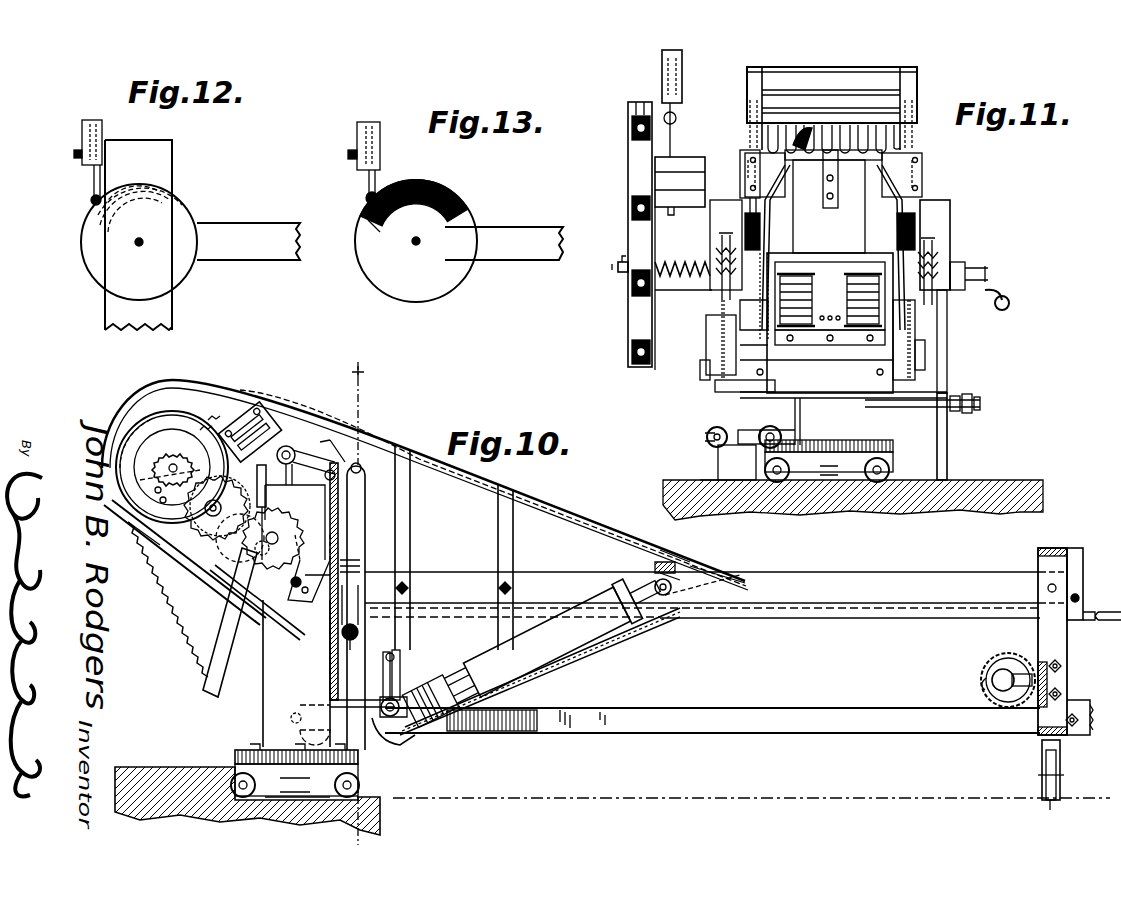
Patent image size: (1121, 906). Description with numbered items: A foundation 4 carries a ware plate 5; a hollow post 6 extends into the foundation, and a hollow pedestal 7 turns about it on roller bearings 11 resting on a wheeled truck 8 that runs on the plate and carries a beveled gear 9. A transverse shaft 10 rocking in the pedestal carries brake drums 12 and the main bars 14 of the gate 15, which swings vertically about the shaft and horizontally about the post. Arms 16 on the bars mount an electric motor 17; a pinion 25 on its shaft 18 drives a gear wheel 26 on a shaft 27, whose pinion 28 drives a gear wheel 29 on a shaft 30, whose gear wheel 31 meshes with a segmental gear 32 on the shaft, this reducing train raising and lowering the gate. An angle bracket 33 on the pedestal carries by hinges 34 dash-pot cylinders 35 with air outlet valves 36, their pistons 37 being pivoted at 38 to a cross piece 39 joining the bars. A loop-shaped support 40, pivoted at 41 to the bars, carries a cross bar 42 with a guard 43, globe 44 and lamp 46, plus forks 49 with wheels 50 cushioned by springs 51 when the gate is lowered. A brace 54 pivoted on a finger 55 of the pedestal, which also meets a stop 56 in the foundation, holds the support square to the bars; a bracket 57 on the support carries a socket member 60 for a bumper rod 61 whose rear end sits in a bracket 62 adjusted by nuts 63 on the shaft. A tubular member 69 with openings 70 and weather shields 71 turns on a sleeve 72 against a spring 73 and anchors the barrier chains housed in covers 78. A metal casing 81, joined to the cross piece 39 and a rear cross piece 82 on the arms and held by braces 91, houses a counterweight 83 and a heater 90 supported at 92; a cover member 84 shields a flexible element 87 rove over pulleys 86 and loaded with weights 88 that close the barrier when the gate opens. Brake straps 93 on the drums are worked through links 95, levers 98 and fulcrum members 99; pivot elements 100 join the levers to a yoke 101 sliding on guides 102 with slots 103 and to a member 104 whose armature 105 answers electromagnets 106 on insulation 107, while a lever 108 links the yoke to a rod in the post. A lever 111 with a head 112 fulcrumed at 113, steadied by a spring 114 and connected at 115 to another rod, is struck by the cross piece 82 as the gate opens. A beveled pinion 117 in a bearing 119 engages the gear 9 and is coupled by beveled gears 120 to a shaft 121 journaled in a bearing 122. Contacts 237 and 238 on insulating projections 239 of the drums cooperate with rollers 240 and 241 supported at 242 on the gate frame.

In FIG. 11, the floor 4 is at (838, 505).
In FIG. 10, the floor 4 is at (158, 767).
In FIG. 11, the track rail 5 is at (858, 500).
In FIG. 10, the track rail 5 is at (380, 783).
In FIG. 11, the floor surface 6 is at (820, 475).
In FIG. 10, the floor surface 6 is at (290, 800).
In FIG. 11, the column 7 is at (795, 395).
In FIG. 10, the column 7 is at (262, 675).
In FIG. 11, the carriage truck 8 is at (892, 462).
In FIG. 10, the carriage truck 8 is at (235, 765).
In FIG. 11, the carriage base plate 9 is at (890, 446).
In FIG. 10, the carriage base plate 9 is at (243, 752).
In FIG. 11, the pivot pin 10 is at (618, 268).
In FIG. 10, the pivot pin 10 is at (310, 561).
In FIG. 10, the section line 11 is at (352, 594).
In FIG. 12, the drum shaft 12 is at (178, 268).
In FIG. 13, the drum shaft 12 is at (430, 290).
In FIG. 11, the drum shaft 12 is at (920, 335).
In FIG. 11, the spring 14 is at (722, 250).
In FIG. 10, the spring 14 is at (745, 615).
In FIG. 10, the arrow 15 is at (987, 563).
In FIG. 10, the pawl lever 16 is at (215, 580).
In FIG. 10, the drum 17 is at (185, 455).
In FIG. 10, the drum rim 18 is at (160, 455).
In FIG. 10, the sprocket 25 is at (168, 460).
In FIG. 10, the rack 26 is at (165, 560).
In FIG. 10, the pinion shaft 27 is at (205, 510).
In FIG. 10, the gear 28 is at (217, 508).
In FIG. 10, the gear housing 29 is at (291, 512).
In FIG. 10, the gear 30 is at (273, 538).
In FIG. 10, the gear 31 is at (240, 538).
In FIG. 10, the bracket 32 is at (296, 620).
In FIG. 11, the slide bar 33 is at (916, 330).
In FIG. 10, the slide bar 33 is at (330, 660).
In FIG. 10, the pivot 34 is at (390, 729).
In FIG. 10, the hydraulic cylinder 35 is at (578, 648).
In FIG. 10, the cylinder trunnion 36 is at (400, 693).
In FIG. 10, the brace arm 37 is at (462, 670).
In FIG. 10, the pivot pin 38 is at (672, 586).
In FIG. 10, the bracket 39 is at (655, 567).
In FIG. 10, the end block 40 is at (1060, 647).
In FIG. 10, the pin 41 is at (1047, 588).
In FIG. 10, the bolts 42 is at (1062, 680).
In FIG. 10, the socket ring 43 is at (1015, 660).
In FIG. 10, the socket 44 is at (1000, 720).
In FIG. 10, the ball 46 is at (992, 682).
In FIG. 10, the caster wheel 49 is at (1060, 766).
In FIG. 10, the caster axle 50 is at (1051, 805).
In FIG. 10, the bolt 51 is at (1070, 735).
In FIG. 11, the lower frame beam 54 is at (960, 398).
In FIG. 10, the lower frame beam 54 is at (852, 705).
In FIG. 11, the adjusting nut 55 is at (982, 403).
In FIG. 11, the support post 56 is at (947, 464).
In FIG. 10, the end plate 57 is at (1083, 574).
In FIG. 10, the coupling 60 is at (1085, 620).
In FIG. 11, the rod 61 is at (1009, 303).
In FIG. 10, the rod 61 is at (887, 618).
In FIG. 11, the lever 62 is at (990, 288).
In FIG. 11, the bracket 63 is at (958, 268).
In FIG. 11, the upright column 69 is at (628, 170).
In FIG. 11, the bracket 70 is at (632, 136).
In FIG. 11, the guide 71 is at (636, 110).
In FIG. 11, the spring 72 is at (678, 262).
In FIG. 11, the rod 73 is at (682, 285).
In FIG. 11, the bracket 78 is at (632, 218).
In FIG. 10, the track 81 is at (578, 525).
In FIG. 10, the track 82 is at (122, 522).
In FIG. 10, the casing 83 is at (168, 382).
In FIG. 11, the rod 84 is at (682, 70).
In FIG. 11, the slot 86 is at (662, 75).
In FIG. 11, the pin 87 is at (678, 114).
In FIG. 11, the weight 88 is at (695, 160).
In FIG. 11, the head 90 is at (848, 120).
In FIG. 10, the head 90 is at (270, 440).
In FIG. 10, the post 91 is at (410, 532).
In FIG. 10, the link 92 is at (200, 462).
In FIG. 11, the housing 93 is at (940, 206).
In FIG. 11, the beam 95 is at (925, 350).
In FIG. 10, the beam 95 is at (395, 615).
In FIG. 10, the post 98 is at (380, 650).
In FIG. 11, the post 99 is at (718, 384).
In FIG. 10, the post 99 is at (402, 658).
In FIG. 10, the knob 100 is at (342, 628).
In FIG. 11, the mast 101 is at (890, 195).
In FIG. 10, the mast 101 is at (366, 496).
In FIG. 11, the base frame 102 is at (770, 372).
In FIG. 10, the base frame 102 is at (310, 725).
In FIG. 11, the plate 103 is at (725, 402).
In FIG. 10, the plate 103 is at (345, 690).
In FIG. 11, the block 104 is at (832, 250).
In FIG. 11, the box 105 is at (812, 265).
In FIG. 11, the coil 106 is at (829, 300).
In FIG. 10, the clamp 107 is at (365, 560).
In FIG. 10, the pivot 108 is at (295, 448).
In FIG. 10, the brace 111 is at (218, 648).
In FIG. 10, the link 112 is at (340, 455).
In FIG. 10, the shaft 113 is at (275, 547).
In FIG. 10, the guide 114 is at (138, 540).
In FIG. 10, the chain 115 is at (305, 430).
In FIG. 11, the gear 117 is at (778, 430).
In FIG. 11, the bracket 119 is at (730, 457).
In FIG. 11, the shaft 120 is at (730, 428).
In FIG. 11, the gear 121 is at (707, 437).
In FIG. 11, the base 122 is at (706, 478).
In FIG. 12, the dashed arc 237 is at (170, 186).
In FIG. 13, the brake shoe 238 is at (380, 195).
In FIG. 12, the arc 239 is at (110, 222).
In FIG. 13, the arc 239 is at (368, 222).
In FIG. 12, the pivot 240 is at (90, 200).
In FIG. 13, the pivot 241 is at (366, 198).
In FIG. 12, the bracket 242 is at (93, 170).
In FIG. 13, the bracket 242 is at (366, 177).
In FIG. 11, the bracket 242 is at (748, 196).
In FIG. 10, the bracket 242 is at (277, 525).